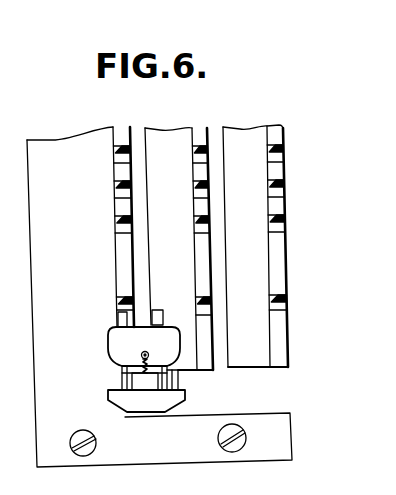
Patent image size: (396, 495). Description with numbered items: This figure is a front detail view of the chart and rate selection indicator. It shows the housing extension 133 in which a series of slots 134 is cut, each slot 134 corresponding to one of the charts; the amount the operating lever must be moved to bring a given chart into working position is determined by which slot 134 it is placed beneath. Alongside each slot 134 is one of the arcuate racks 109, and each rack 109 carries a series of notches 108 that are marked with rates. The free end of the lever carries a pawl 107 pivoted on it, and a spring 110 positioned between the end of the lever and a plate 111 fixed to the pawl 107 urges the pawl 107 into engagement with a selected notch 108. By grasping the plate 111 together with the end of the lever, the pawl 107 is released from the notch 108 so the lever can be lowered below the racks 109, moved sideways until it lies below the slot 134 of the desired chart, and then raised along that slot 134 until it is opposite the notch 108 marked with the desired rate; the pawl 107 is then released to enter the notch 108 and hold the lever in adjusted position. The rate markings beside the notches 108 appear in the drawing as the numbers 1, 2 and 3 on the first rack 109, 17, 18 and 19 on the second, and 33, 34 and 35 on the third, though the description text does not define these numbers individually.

The housing extension 133 is at (62, 150).
The slot 134 is at (137, 128).
The arcuate rack 109 is at (266, 225).
The notch 108 is at (280, 170).
The pawl 107 is at (118, 311).
The plate 111 is at (123, 343).
The spring 110 is at (122, 366).
The type cell 1 is at (118, 207).
The type cell 2 is at (118, 172).
The type cell 3 is at (117, 137).
The type cell 17 is at (192, 207).
The type cell 18 is at (192, 172).
The type cell 19 is at (192, 137).
The type cell 33 is at (268, 206).
The type cell 34 is at (267, 171).
The type cell 35 is at (267, 136).